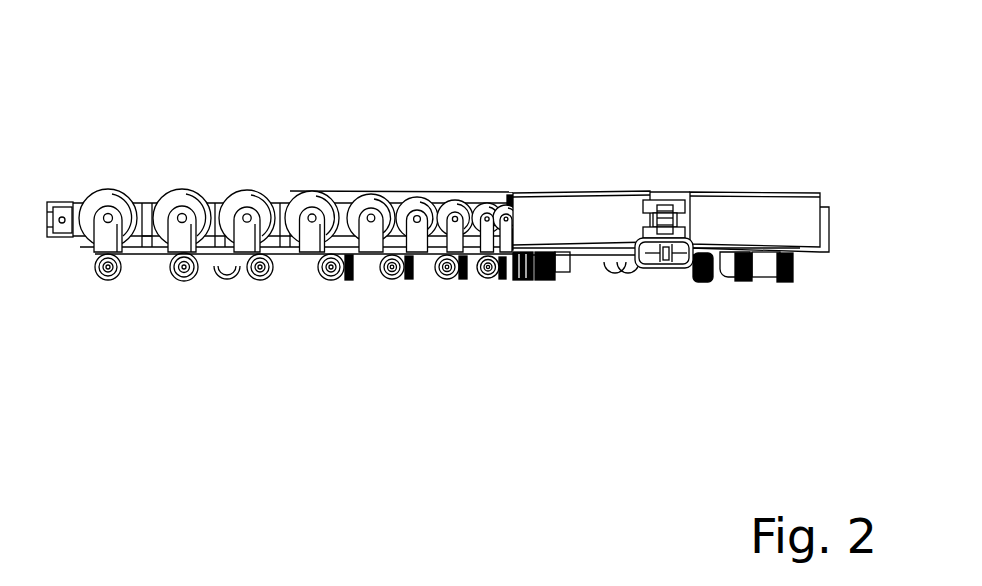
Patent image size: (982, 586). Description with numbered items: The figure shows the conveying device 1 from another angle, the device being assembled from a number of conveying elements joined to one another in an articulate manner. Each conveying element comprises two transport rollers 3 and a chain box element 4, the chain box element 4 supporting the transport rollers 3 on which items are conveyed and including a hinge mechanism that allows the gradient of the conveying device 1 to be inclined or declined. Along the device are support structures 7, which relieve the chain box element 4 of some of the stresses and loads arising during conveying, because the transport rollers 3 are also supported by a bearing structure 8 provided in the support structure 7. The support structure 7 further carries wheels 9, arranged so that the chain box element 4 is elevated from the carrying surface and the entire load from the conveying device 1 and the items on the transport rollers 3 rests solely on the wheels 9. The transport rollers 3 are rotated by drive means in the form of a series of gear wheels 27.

The conveying device 1 is at (388, 158).
The transport rollers 3 is at (562, 205).
The chain box element 4 is at (665, 198).
The support structure 7 is at (178, 234).
The bearing structure 8 is at (110, 214).
The wheels 9 is at (260, 280).
The gear wheels 27 is at (672, 270).